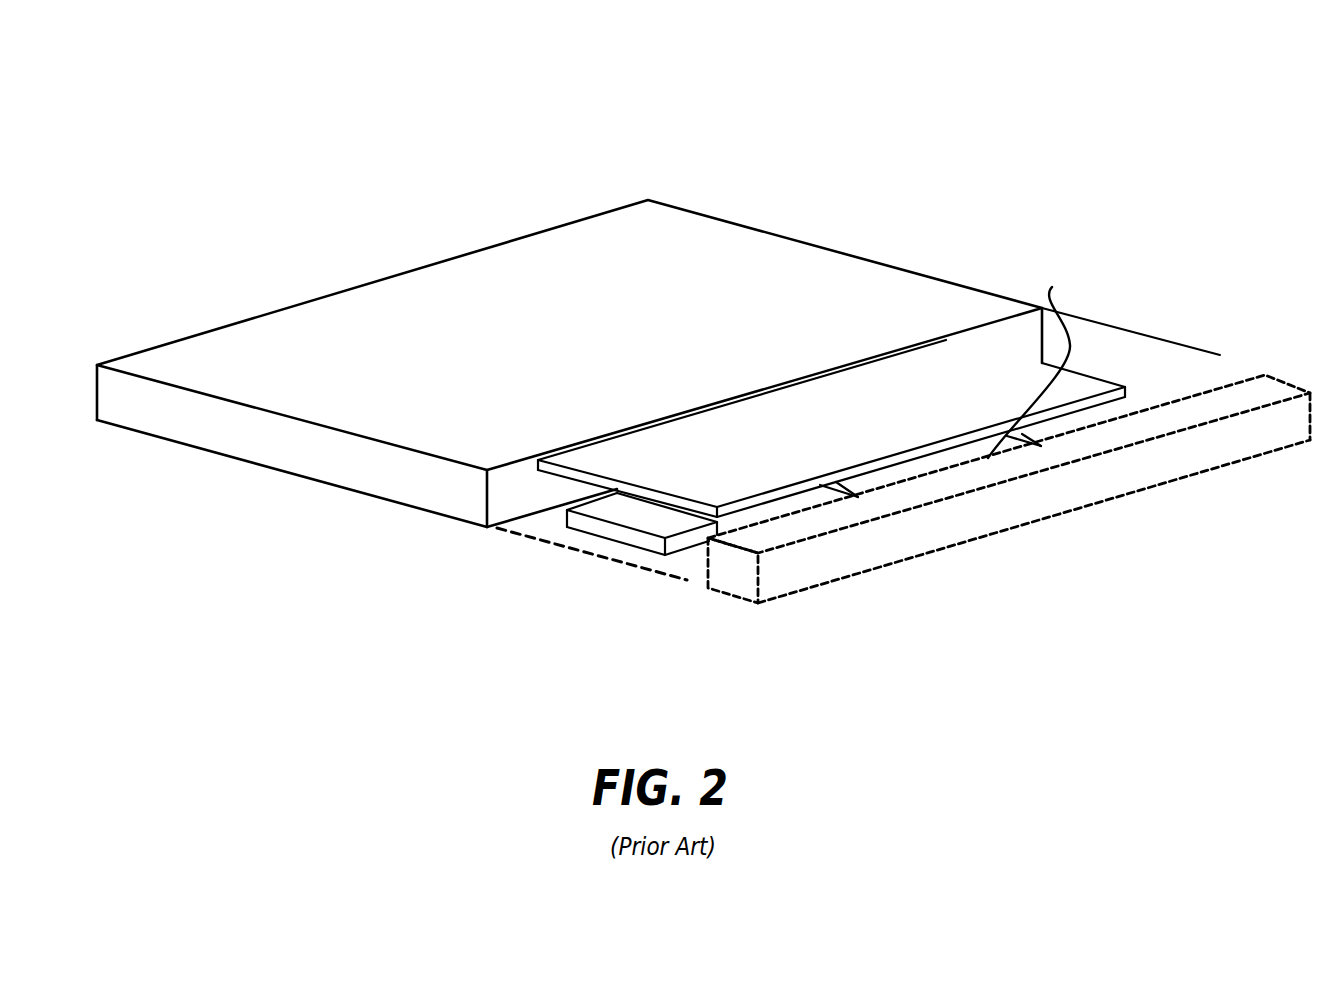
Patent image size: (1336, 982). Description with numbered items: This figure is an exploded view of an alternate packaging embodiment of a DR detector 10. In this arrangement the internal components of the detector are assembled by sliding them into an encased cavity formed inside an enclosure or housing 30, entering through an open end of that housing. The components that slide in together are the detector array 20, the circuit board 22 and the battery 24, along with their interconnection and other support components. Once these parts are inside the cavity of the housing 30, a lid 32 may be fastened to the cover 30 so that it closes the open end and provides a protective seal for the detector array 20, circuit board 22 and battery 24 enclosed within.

The DR detector 10 is at (829, 82).
The detector array 20 is at (783, 433).
The circuit board 22 is at (1040, 355).
The battery 24 is at (602, 545).
The housing 30 is at (465, 287).
The lid 32 is at (1080, 508).